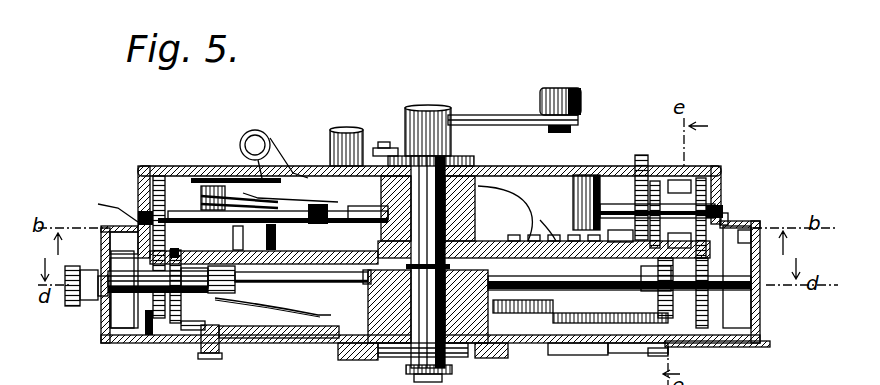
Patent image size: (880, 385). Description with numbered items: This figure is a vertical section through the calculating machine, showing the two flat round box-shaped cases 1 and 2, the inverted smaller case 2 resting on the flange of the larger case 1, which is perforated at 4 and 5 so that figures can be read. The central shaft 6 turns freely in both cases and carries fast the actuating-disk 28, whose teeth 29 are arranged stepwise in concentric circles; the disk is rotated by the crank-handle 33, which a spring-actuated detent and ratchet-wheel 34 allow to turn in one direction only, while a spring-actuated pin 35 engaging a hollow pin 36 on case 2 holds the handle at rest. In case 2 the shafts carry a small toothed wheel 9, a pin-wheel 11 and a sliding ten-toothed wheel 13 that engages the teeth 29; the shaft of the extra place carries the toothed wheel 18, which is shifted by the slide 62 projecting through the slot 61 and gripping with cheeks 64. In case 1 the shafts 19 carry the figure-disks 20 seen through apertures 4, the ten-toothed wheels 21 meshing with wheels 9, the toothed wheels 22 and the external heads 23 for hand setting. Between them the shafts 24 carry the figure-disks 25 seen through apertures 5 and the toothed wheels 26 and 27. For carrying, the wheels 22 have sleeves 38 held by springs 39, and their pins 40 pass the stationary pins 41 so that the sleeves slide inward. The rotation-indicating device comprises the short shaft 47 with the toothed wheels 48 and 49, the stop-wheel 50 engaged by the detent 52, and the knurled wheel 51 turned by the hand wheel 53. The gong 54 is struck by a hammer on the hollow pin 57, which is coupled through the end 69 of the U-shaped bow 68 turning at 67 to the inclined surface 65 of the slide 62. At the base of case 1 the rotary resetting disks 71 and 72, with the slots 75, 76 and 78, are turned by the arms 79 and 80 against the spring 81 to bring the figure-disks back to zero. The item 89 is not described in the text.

The case 1 is at (93, 296).
The case 2 is at (165, 158).
The perforation 4 is at (108, 218).
The perforation 5 is at (738, 214).
The shaft 6 is at (445, 150).
The small wheel 9 is at (147, 178).
The pin-wheel 11 is at (316, 215).
The ten-toothed wheel 13 is at (348, 214).
The toothed wheel 18 is at (312, 203).
The shaft 19 is at (322, 274).
The figure-disk 20 is at (93, 236).
The ten-toothed wheel 21 is at (136, 262).
The toothed wheel 22 is at (190, 222).
The head 23 is at (62, 298).
The shaft 24 is at (596, 305).
The figure-disk 25 is at (743, 250).
The toothed wheel 26 is at (700, 320).
The toothed wheel 27 is at (656, 290).
The actuating-disk 28 is at (540, 212).
The teeth 29 is at (558, 227).
The crank-handle 33 is at (560, 80).
The spring-actuated detent and ratchet-wheel 34 is at (398, 140).
The spring-actuated pin 35 is at (550, 125).
The hollow pin 36 is at (338, 122).
The sleeve 38 is at (178, 282).
The spring 39 is at (265, 300).
The pin 40 is at (193, 330).
The stationary pin 41 is at (142, 330).
The short shaft 47 is at (590, 167).
The toothed wheel 48 is at (714, 200).
The toothed wheel 49 is at (648, 173).
The stop-wheel 50 is at (693, 170).
The knurled wheel 51 is at (608, 198).
The detent 52 is at (619, 228).
The wheel 53 is at (634, 147).
The gong 54 is at (520, 200).
The hollow pin 57 is at (198, 170).
The slot 61 is at (238, 124).
The slide 62 is at (280, 150).
The cheeks 64 is at (270, 180).
The inclined surface 65 is at (262, 220).
The pivot of the bow 67 is at (376, 148).
The U-shaped bow 68 is at (262, 188).
The end of the bow 69 is at (225, 222).
The rotary disk 71 is at (300, 335).
The rotary disk 72 is at (578, 347).
The slot 75 is at (648, 348).
The slot 76 is at (235, 330).
The slot 78 is at (628, 345).
The arm 79 is at (700, 339).
The arm 80 is at (198, 351).
The spring 81 is at (512, 302).
The lever 89 is at (95, 218).